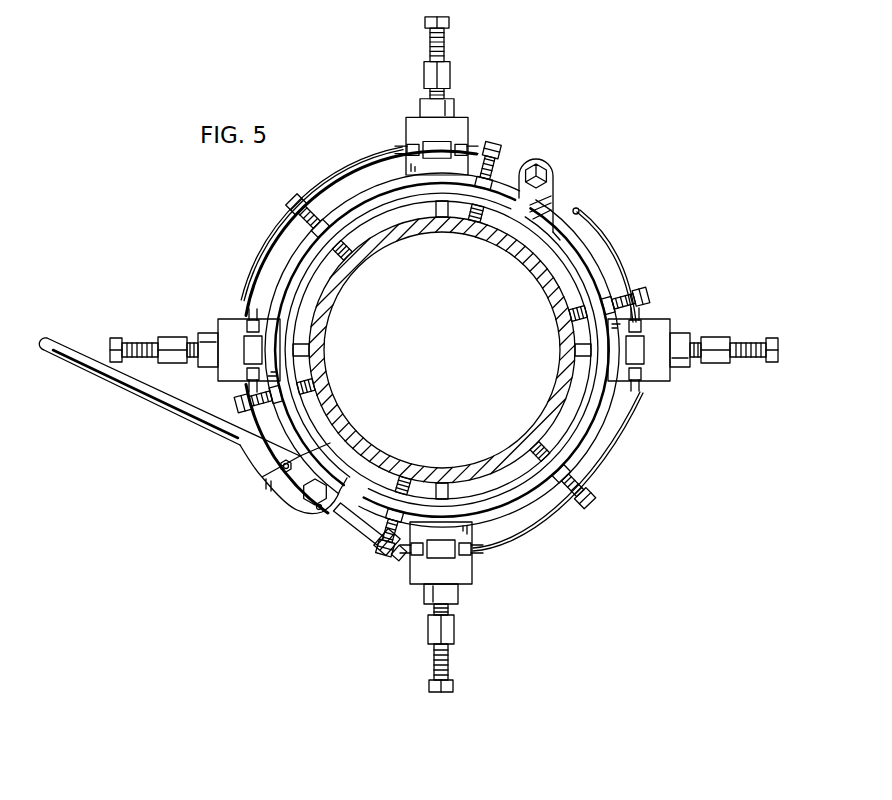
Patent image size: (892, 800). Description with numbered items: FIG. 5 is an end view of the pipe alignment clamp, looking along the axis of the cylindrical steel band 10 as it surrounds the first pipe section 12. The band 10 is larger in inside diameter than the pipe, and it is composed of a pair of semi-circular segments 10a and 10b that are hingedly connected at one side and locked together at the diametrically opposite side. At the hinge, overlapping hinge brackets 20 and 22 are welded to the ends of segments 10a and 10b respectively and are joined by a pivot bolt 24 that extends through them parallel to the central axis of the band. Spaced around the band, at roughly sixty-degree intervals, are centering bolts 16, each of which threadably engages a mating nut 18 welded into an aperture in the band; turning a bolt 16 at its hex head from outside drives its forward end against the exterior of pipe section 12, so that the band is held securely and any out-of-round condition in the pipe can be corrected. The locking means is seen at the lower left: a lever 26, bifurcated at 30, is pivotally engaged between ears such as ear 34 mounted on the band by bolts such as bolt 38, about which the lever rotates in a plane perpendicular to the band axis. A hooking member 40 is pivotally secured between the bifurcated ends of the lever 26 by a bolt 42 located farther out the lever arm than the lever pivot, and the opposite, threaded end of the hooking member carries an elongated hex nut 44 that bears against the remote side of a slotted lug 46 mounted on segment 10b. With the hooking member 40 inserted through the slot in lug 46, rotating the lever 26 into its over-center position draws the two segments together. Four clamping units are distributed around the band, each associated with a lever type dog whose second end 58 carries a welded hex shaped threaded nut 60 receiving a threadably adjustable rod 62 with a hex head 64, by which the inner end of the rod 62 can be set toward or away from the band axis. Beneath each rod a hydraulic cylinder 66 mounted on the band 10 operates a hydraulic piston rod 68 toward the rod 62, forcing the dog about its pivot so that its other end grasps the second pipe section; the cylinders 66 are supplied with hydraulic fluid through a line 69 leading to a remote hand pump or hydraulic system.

The cylindrical steel band 10 is at (582, 262).
The semi-circular segment 10a is at (268, 296).
The semi-circular segment 10b is at (598, 438).
The first pipe section 12 is at (375, 238).
The centering bolts 16 is at (290, 205).
The mating nut 18 is at (314, 236).
The hinge bracket 20 is at (540, 164).
The hinge bracket 22 is at (556, 204).
The pivot bolt 24 is at (552, 174).
The lever 26 is at (74, 346).
The bifurcated end of lever 30 is at (278, 493).
The ear 34 is at (318, 509).
The bolt 38 is at (310, 500).
The hooking member 40 is at (338, 513).
The bolt 42 is at (278, 472).
The elongated hex nut 44 is at (380, 542).
The lug 46 is at (394, 556).
The second end of lever type dog 58 is at (422, 78).
The hex shaped threaded nut 60 is at (450, 74).
The adjustable rod 62 is at (445, 46).
The hex head 64 is at (450, 18).
The hydraulic cylinder 66 is at (468, 142).
The hydraulic piston rod 68 is at (456, 112).
The hydraulic line 69 is at (596, 222).